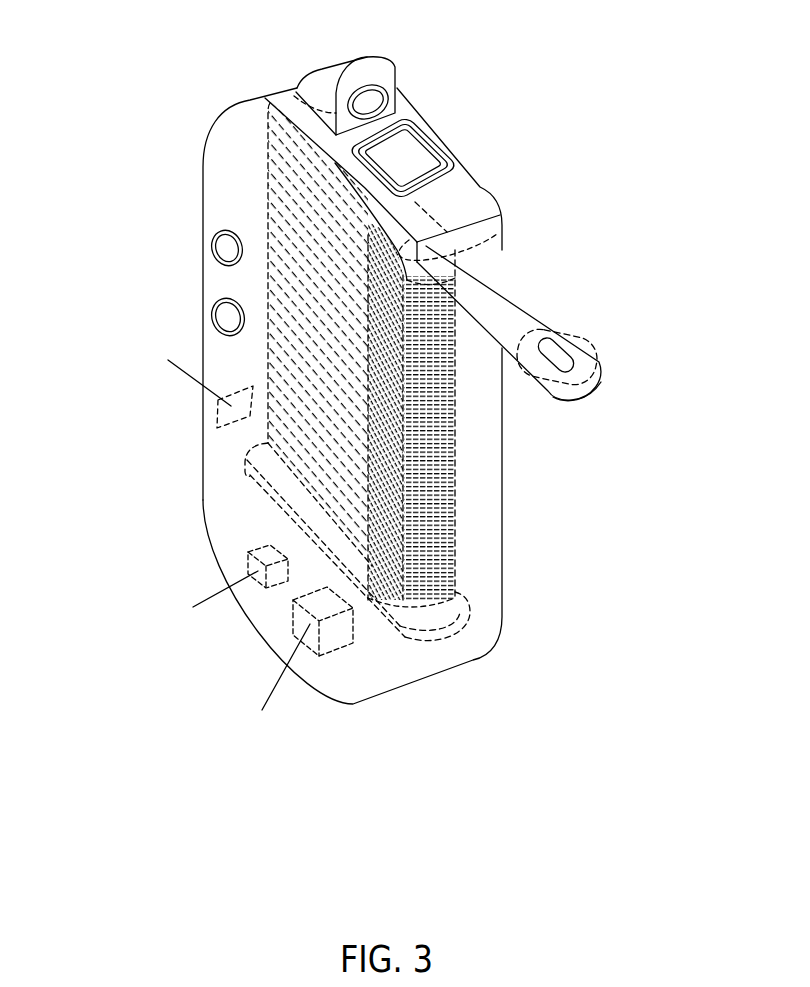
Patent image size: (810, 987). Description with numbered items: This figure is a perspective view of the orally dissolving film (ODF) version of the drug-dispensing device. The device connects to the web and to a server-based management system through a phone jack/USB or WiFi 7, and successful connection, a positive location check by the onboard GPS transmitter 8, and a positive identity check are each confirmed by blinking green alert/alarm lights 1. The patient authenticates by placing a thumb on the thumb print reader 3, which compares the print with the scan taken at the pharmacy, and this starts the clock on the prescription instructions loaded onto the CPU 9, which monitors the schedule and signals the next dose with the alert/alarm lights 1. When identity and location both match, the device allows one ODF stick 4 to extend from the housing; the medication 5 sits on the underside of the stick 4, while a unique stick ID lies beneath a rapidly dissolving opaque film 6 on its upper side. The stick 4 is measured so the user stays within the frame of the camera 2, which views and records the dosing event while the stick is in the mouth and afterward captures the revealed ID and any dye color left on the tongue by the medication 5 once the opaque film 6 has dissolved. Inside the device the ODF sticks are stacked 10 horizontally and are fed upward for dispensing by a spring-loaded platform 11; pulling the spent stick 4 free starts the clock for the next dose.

The alert/alarm lights 1 is at (190, 304).
The camera 2 is at (368, 86).
The thumb print reader 3 is at (423, 163).
The ODF stick 4 is at (540, 264).
The medication 5 is at (592, 405).
The opaque film 6 is at (612, 336).
The phone jack/USB or WiFi 7 is at (191, 406).
The GPS transmitter 8 is at (224, 550).
The CPU 9 is at (340, 672).
The stacked ODF sticks 10 is at (472, 482).
The spring-loaded platform 11 is at (486, 630).